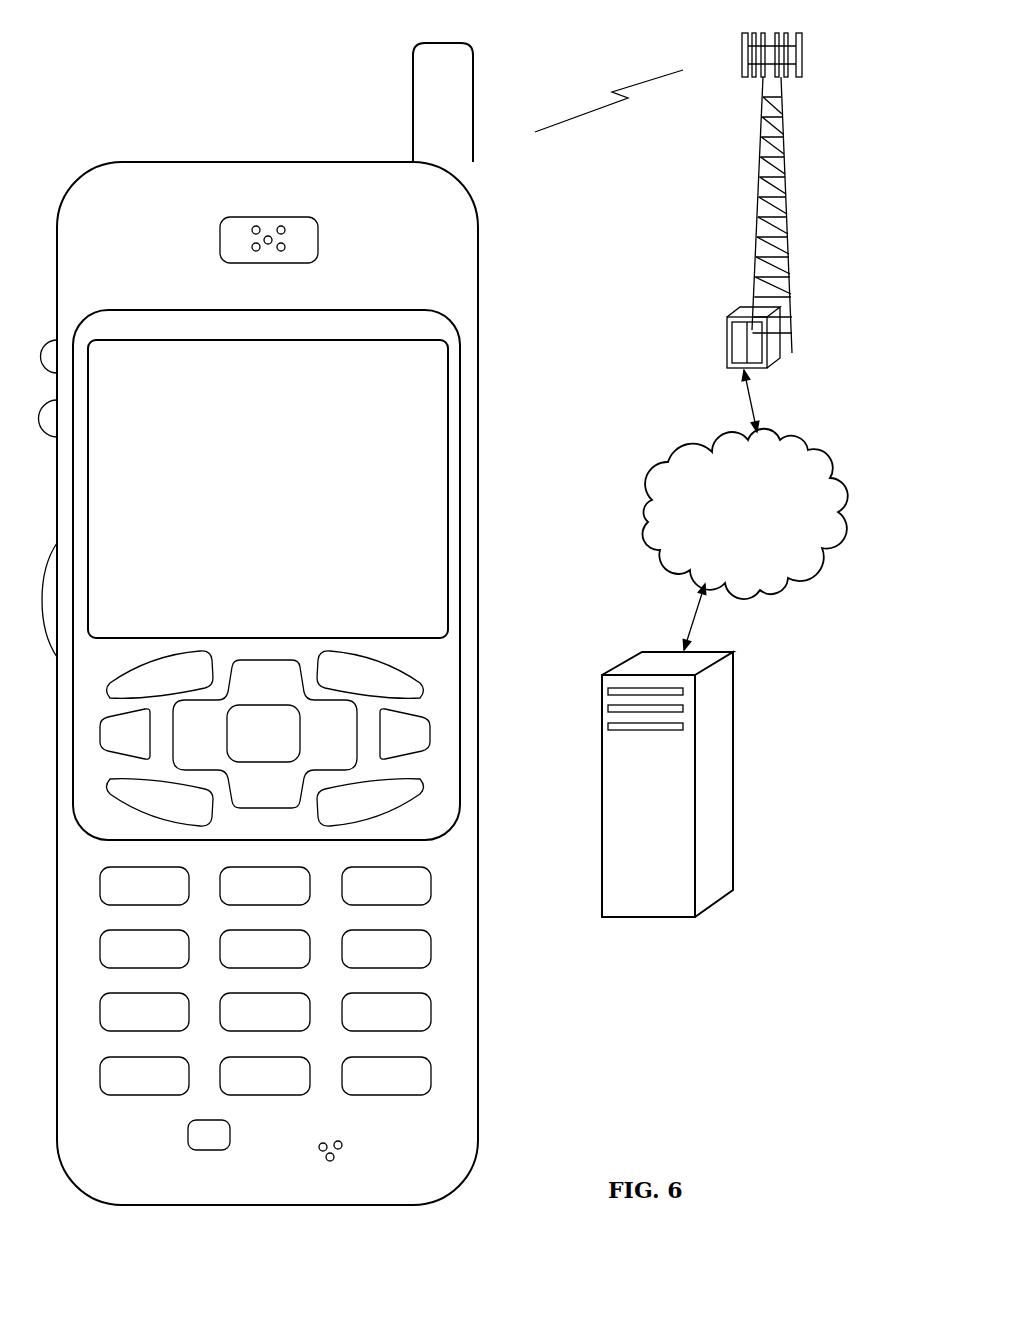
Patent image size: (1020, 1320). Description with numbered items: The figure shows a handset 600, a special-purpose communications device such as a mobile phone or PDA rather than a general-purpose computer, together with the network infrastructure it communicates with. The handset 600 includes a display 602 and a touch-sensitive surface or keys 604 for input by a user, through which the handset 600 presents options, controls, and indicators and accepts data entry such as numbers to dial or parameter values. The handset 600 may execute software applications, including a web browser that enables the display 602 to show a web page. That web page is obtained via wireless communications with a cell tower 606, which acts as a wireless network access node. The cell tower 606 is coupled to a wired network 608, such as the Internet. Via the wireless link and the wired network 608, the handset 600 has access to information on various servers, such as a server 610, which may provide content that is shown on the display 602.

The handset 600 is at (112, 1205).
The display 602 is at (452, 352).
The keys 604 is at (486, 650).
The cell tower 606 is at (758, 213).
The wired network 608 is at (672, 560).
The server 610 is at (647, 917).